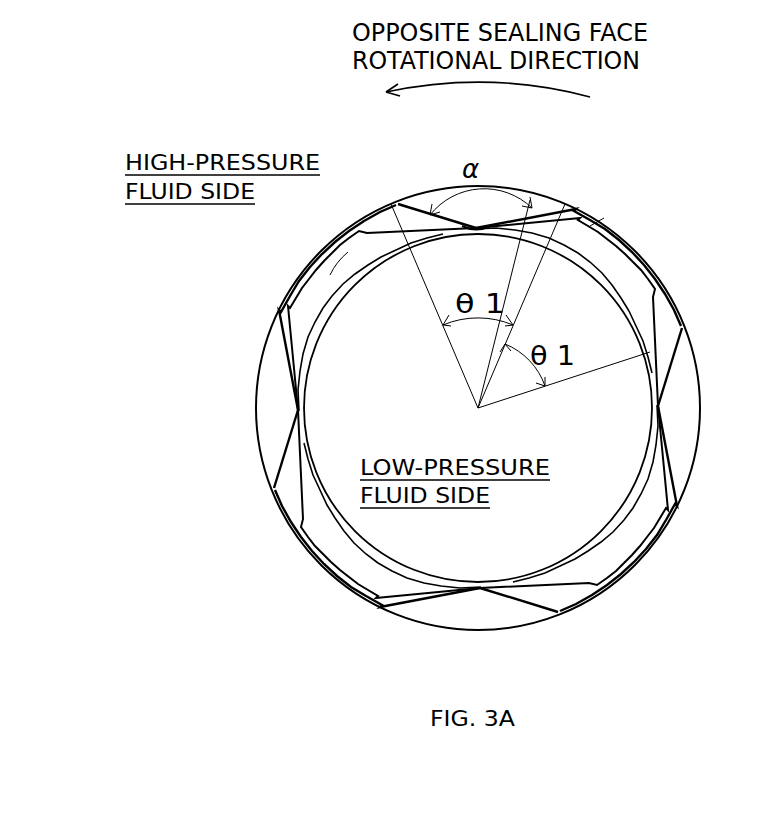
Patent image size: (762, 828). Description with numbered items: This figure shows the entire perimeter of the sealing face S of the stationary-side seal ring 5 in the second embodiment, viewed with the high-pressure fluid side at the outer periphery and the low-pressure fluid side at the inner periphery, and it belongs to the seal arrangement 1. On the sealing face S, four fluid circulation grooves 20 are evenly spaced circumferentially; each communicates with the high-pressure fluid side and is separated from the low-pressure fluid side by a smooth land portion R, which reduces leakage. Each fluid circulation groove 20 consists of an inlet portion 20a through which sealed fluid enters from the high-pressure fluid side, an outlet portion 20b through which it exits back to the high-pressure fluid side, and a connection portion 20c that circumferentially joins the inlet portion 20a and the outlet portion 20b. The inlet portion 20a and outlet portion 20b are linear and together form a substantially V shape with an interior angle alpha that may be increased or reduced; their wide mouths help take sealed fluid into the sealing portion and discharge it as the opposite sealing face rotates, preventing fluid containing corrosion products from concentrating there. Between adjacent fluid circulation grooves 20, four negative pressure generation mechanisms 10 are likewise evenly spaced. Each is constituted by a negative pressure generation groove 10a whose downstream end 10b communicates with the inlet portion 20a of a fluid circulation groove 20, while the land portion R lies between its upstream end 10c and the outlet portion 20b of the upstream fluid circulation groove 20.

The mechanical seal 1 is at (761, 300).
The stationary-side seal ring 5 is at (352, 220).
The negative pressure generation mechanism 10 is at (632, 257).
The negative pressure generation groove 10a is at (634, 284).
The downstream end of negative pressure generation groove 10b is at (552, 250).
The upstream end of negative pressure generation groove 10c is at (650, 350).
The fluid circulation groove 20 is at (520, 206).
The inlet portion 20a is at (553, 205).
The outlet portion 20b is at (405, 210).
The connection portion 20c is at (481, 236).
The sealing face S is at (597, 222).
The smooth portion (land portion) R is at (382, 228).